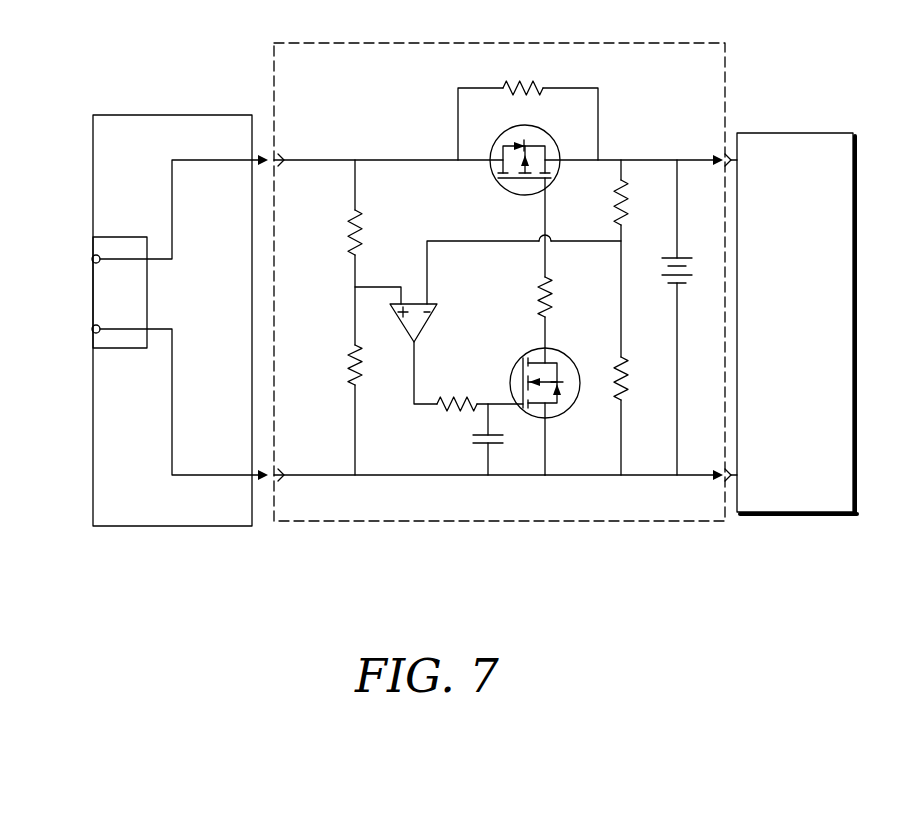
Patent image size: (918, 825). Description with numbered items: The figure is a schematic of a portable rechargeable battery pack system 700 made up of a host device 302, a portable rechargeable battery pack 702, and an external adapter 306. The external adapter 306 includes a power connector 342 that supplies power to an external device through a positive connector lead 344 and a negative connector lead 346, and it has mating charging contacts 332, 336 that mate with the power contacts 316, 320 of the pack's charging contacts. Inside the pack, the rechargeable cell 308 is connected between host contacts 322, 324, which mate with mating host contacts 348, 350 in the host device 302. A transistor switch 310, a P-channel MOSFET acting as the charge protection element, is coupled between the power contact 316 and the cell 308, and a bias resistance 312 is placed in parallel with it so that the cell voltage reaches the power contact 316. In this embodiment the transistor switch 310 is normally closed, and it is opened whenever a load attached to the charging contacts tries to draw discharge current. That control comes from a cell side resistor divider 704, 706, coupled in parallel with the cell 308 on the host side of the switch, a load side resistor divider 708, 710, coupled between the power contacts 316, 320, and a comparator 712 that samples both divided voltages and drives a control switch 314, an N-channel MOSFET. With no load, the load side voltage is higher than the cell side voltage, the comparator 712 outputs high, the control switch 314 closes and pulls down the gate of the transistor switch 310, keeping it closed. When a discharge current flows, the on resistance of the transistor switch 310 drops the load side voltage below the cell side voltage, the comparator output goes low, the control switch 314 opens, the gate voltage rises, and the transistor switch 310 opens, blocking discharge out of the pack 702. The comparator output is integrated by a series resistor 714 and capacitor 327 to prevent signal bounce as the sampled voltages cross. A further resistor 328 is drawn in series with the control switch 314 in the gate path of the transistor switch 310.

The portable rechargeable battery pack system 700 is at (66, 43).
The portable rechargeable battery pack 702 is at (613, 43).
The host device 302 is at (798, 133).
The external adapter 306 is at (160, 527).
The power connector 342 is at (112, 349).
The positive connector lead 344 is at (91, 259).
The negative connector lead 346 is at (91, 329).
The mating charging contact 332 is at (242, 158).
The mating charging contact 336 is at (218, 474).
The power contact 316 is at (284, 160).
The power contact 320 is at (284, 475).
The host contact 322 is at (697, 159).
The host contact 324 is at (707, 477).
The mating host contact 348 is at (733, 160).
The mating host contact 350 is at (735, 476).
The bias resistance 312 is at (520, 85).
The transistor switch 310 is at (508, 193).
The load side resistor divider resistor 708 is at (363, 228).
The load side resistor divider resistor 710 is at (347, 360).
The comparator 712 is at (432, 318).
The series resistor 714 is at (473, 396).
The capacitor 327 is at (480, 446).
The resistor 328 is at (536, 300).
The control switch 314 is at (568, 355).
The cell side resistor divider resistor 704 is at (629, 203).
The cell side resistor divider resistor 706 is at (629, 382).
The rechargeable cell 308 is at (675, 287).